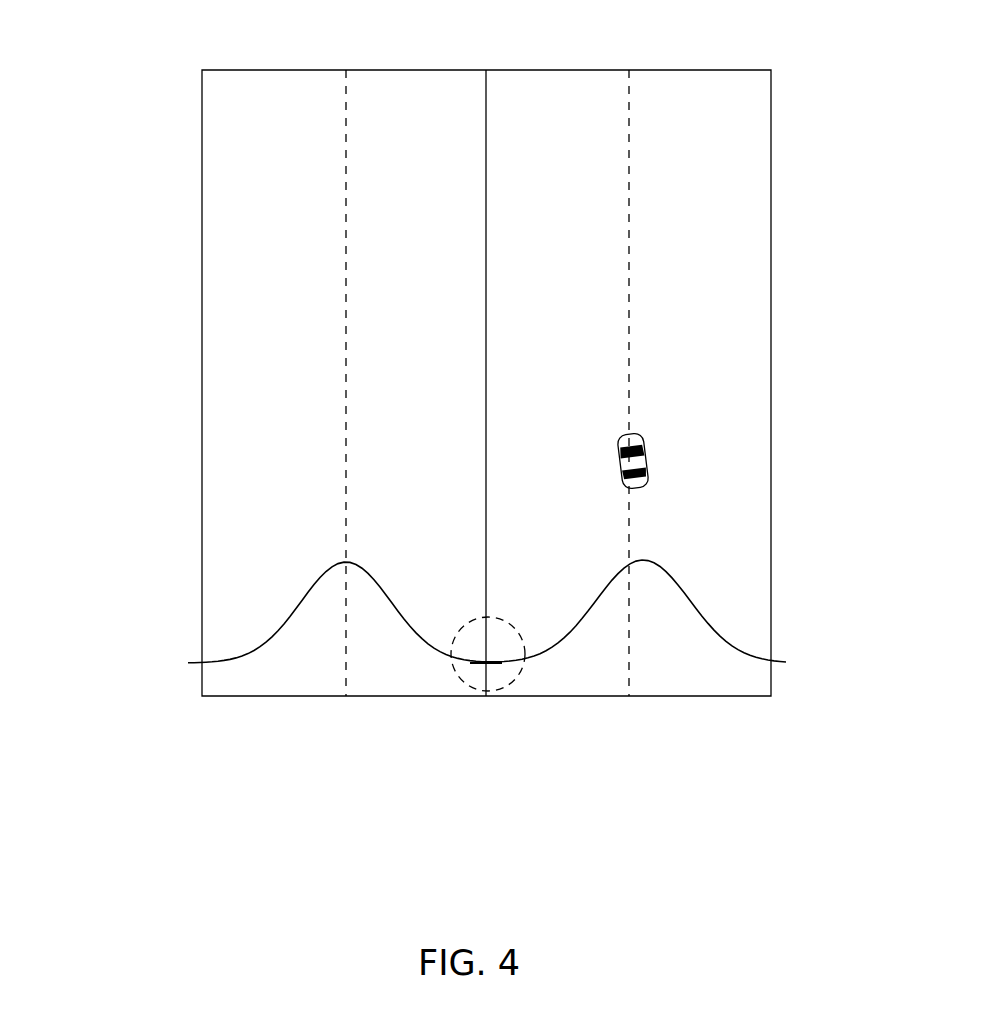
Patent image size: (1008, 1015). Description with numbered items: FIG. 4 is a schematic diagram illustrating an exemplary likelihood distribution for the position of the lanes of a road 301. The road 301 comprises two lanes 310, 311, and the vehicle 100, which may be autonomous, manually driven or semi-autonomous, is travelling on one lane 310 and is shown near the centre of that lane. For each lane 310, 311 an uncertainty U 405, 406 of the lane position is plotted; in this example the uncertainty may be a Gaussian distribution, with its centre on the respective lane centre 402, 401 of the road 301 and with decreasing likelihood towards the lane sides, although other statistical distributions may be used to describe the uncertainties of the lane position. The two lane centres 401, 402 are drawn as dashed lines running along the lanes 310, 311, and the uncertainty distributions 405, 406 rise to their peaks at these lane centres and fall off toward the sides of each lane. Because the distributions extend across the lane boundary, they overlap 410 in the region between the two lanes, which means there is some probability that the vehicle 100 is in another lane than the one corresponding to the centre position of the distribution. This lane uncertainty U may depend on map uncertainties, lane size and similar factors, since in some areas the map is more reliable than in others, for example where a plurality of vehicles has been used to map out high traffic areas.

The vehicle 100 is at (647, 465).
The road 301 is at (497, 745).
The lane 310 is at (700, 696).
The lane 311 is at (268, 696).
The lane centre 401 is at (631, 108).
The lane centre 402 is at (347, 108).
The uncertainty 405 is at (700, 609).
The uncertainty 406 is at (290, 609).
The overlap 410 is at (508, 685).